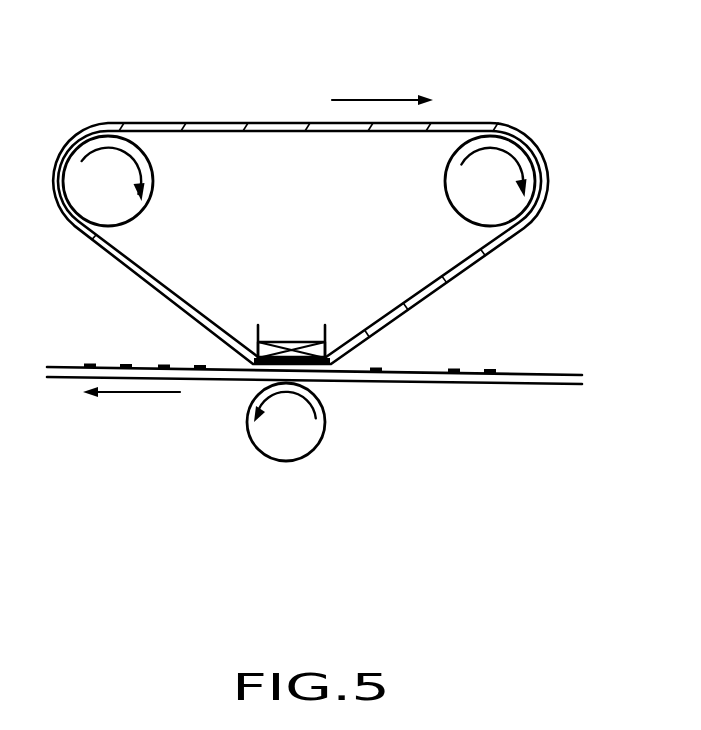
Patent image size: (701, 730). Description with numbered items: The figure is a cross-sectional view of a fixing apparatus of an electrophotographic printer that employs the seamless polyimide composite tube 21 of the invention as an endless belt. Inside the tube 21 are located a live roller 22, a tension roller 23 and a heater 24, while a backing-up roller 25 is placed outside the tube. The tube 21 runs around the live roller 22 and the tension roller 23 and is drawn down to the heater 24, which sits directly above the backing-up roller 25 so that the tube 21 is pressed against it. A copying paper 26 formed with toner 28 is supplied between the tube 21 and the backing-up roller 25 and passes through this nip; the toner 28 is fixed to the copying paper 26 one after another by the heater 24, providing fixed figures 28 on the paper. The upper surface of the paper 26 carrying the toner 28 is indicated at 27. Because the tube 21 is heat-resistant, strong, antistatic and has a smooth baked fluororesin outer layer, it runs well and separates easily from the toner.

The seamless polyimide composite tube 21 is at (221, 122).
The live roller 22 is at (518, 145).
The tension roller 23 is at (99, 140).
The heater 24 is at (288, 340).
The backing-up roller 25 is at (310, 437).
The copying paper 26 is at (566, 386).
The image receiving layer 27 is at (496, 371).
The toner 28 is at (90, 364).